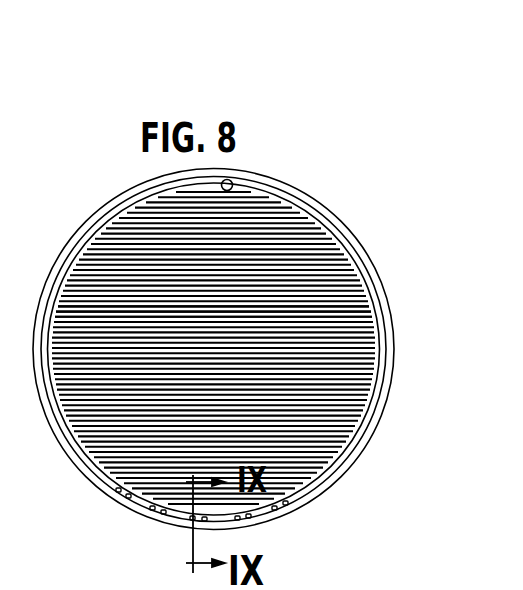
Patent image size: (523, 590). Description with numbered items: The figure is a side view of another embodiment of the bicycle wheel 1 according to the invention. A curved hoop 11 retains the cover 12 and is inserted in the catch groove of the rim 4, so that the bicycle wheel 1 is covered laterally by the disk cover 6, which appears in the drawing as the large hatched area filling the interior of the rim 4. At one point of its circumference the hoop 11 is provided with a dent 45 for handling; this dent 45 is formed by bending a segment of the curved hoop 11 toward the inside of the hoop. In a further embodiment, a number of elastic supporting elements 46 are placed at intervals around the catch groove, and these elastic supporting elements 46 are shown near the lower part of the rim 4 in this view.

The bicycle wheel 1 is at (395, 247).
The rim 4 is at (378, 413).
The disk cover 6 is at (300, 257).
The hoop 11 is at (330, 472).
The cover 12 is at (297, 318).
The dent 45 is at (233, 183).
The elastic supporting elements 46 is at (158, 516).